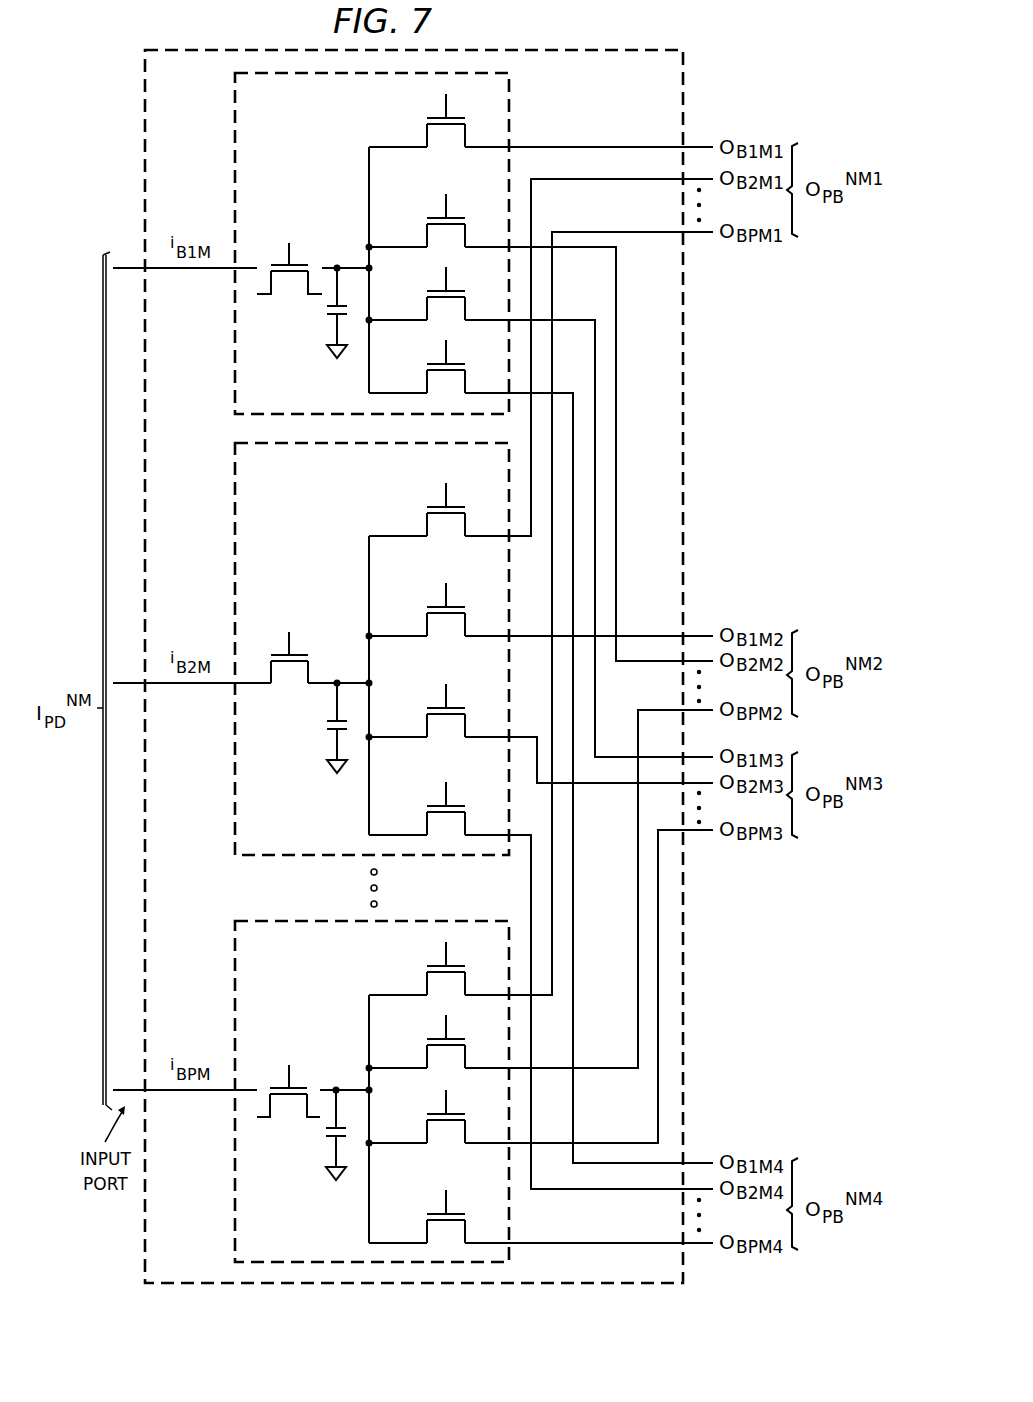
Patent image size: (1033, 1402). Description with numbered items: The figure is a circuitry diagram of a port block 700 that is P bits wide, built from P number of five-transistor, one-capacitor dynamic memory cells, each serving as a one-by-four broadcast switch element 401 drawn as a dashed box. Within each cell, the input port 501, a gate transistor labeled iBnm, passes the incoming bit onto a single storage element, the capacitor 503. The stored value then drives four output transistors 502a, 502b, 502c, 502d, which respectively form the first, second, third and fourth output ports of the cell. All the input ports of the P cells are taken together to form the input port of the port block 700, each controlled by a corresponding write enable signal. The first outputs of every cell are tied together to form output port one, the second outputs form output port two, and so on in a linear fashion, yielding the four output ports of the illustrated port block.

The port block 700 is at (145, 157).
The broadcast switch element 401 is at (234, 330).
The input port 501 is at (297, 653).
The output transistor 502a is at (438, 506).
The output transistor 502b is at (438, 606).
The output transistor 502c is at (438, 708).
The output transistor 502d is at (438, 806).
The capacitor 503 is at (327, 725).